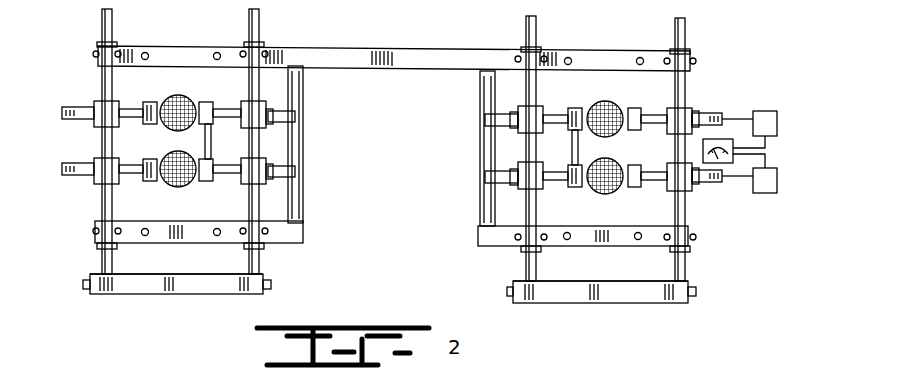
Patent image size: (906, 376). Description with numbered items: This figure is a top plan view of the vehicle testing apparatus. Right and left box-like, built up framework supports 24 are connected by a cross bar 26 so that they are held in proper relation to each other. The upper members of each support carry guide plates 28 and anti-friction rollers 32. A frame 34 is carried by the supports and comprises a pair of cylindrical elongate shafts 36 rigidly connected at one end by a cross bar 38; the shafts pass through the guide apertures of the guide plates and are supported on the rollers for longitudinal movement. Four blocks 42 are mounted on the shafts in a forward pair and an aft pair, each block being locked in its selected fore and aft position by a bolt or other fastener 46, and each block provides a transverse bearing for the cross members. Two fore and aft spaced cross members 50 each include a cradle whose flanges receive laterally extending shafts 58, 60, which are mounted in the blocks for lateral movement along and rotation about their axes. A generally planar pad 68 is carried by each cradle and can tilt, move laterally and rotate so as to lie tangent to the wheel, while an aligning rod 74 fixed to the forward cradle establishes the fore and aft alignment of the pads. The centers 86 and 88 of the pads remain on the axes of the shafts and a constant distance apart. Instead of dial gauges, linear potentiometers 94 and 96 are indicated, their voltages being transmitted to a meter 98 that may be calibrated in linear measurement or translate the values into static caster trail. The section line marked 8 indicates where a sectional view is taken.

The section line 8- 8 is at (92, 147).
The framework support 24 is at (304, 203).
The cross bar 26 is at (382, 54).
The guide plate 28 is at (113, 42).
The anti-friction roller 32 is at (95, 53).
The frame 34 is at (135, 295).
The cylindrical elongate shaft 36 is at (103, 20).
The cross bar 38 is at (200, 288).
The block 42 is at (114, 126).
The bolt or other fastener 46 is at (283, 118).
The cross member 50 is at (140, 190).
The laterally extending shaft 58 is at (288, 110).
The laterally extending shaft 60 is at (72, 106).
The pad 68 is at (187, 100).
The aligning rod 74 is at (212, 142).
The center of pad 86 is at (174, 158).
The center of pad 88 is at (178, 108).
The linear potentiometer 94 is at (766, 191).
The linear potentiometer 96 is at (768, 110).
The meter 98 is at (728, 138).